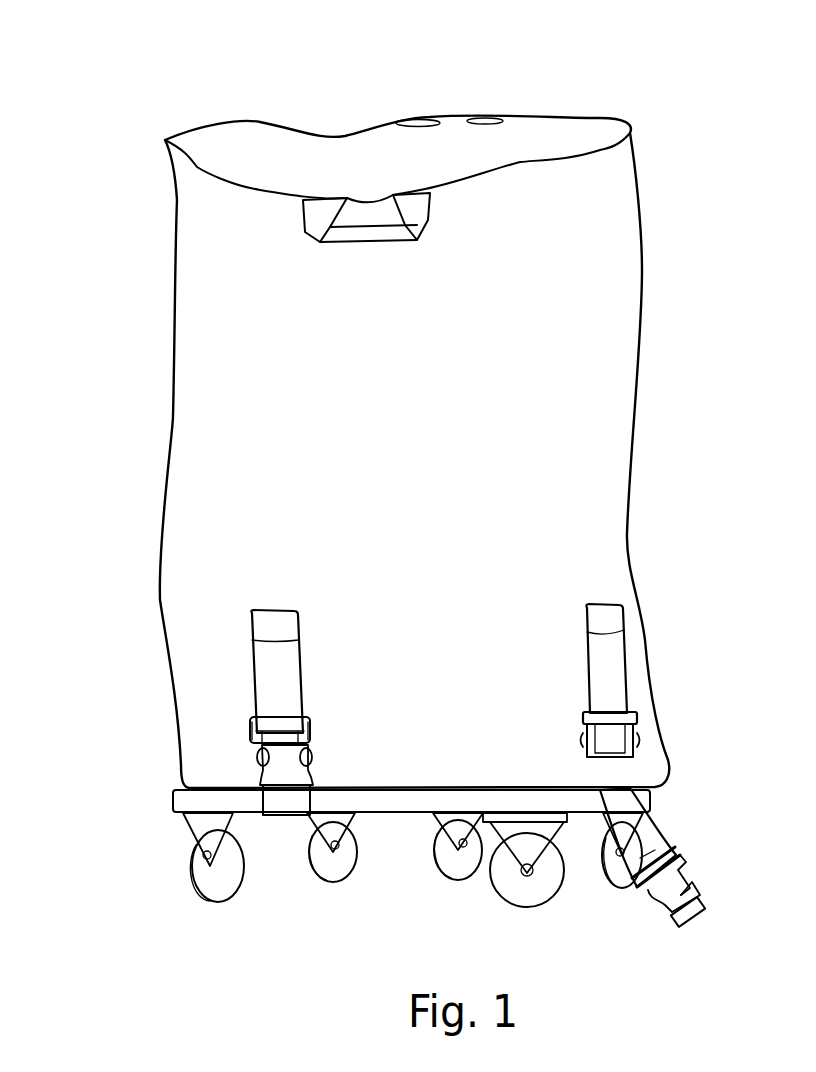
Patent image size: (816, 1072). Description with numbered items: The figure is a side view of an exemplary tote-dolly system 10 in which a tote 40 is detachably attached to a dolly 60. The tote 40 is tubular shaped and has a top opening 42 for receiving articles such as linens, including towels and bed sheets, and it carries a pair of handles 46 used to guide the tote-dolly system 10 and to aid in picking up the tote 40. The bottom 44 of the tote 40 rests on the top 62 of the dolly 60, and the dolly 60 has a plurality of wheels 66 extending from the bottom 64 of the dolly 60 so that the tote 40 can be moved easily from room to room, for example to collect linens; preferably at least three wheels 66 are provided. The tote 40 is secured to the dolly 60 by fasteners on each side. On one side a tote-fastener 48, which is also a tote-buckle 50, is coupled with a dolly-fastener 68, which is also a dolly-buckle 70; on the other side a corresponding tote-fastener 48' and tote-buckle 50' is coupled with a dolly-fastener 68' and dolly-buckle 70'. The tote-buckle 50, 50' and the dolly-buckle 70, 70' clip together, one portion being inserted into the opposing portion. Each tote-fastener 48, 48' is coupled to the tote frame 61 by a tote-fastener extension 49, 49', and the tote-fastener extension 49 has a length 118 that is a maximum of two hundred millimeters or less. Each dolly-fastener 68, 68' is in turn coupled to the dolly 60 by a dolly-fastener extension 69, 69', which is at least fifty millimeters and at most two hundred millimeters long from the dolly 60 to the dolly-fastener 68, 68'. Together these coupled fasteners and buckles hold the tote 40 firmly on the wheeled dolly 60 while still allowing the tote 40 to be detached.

The tote-dolly system 10 is at (177, 118).
The tote 40 is at (607, 253).
The top opening 42 is at (285, 167).
The bottom of the tote 44 is at (660, 787).
The handles 46 is at (370, 233).
The tote-fastener 48 is at (309, 705).
The tote-fastener 48' is at (567, 716).
The tote-fastener extension 49 is at (246, 671).
The tote-fastener extension 49' is at (573, 639).
The tote-buckle 50 is at (252, 713).
The tote-buckle 50' is at (568, 735).
The dolly 60 is at (430, 797).
The tote frame 61 is at (187, 807).
The top of the dolly 62 is at (183, 783).
The bottom of the dolly 64 is at (387, 815).
The wheels 66 is at (205, 880).
The dolly-fastener 68 is at (307, 749).
The dolly-fastener 68' is at (687, 857).
The dolly-fastener extension 69 is at (321, 784).
The dolly-fastener extension 69' is at (664, 836).
The dolly-buckle 70 is at (261, 743).
The dolly-buckle 70' is at (714, 890).
The length of the tote-fastener extension 118 is at (640, 732).